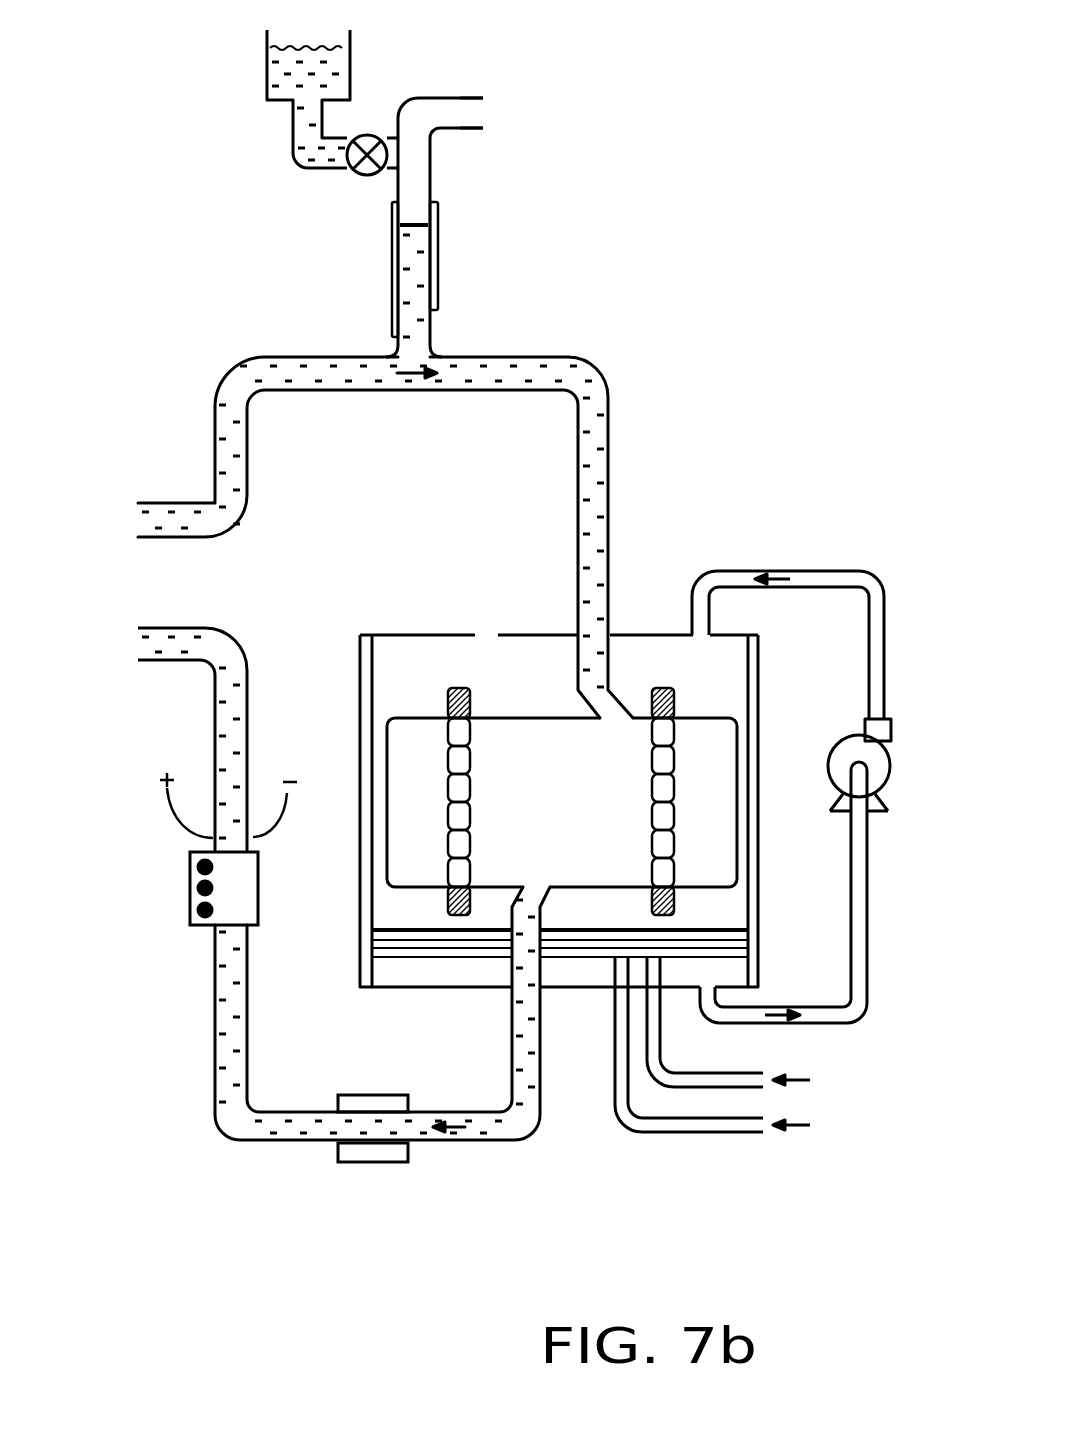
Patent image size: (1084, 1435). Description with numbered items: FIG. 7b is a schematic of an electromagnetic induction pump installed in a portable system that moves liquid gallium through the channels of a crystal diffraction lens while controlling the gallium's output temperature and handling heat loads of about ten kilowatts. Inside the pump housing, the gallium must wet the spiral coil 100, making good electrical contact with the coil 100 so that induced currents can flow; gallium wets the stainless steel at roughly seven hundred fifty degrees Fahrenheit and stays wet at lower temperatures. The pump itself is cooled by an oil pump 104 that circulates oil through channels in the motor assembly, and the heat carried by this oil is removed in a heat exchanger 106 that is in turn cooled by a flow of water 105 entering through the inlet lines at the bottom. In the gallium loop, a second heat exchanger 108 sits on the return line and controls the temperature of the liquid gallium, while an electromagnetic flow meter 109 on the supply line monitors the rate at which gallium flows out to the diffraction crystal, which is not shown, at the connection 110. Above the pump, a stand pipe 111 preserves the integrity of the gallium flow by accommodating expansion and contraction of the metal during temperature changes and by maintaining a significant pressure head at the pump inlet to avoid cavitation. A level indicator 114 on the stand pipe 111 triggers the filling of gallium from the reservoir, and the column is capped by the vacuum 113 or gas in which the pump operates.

The spiral coil 100 is at (450, 717).
The oil pump 104 is at (878, 783).
The flow of water 105 is at (743, 1133).
The heat exchanger 106 is at (572, 987).
The second heat exchanger 108 is at (373, 1162).
The electromagnetic flow meter 109 is at (190, 868).
The connection to the diffraction crystal 110 is at (138, 520).
The stand pipe 111 is at (433, 178).
The vacuum 113 is at (485, 112).
The level indicator 114 is at (438, 273).